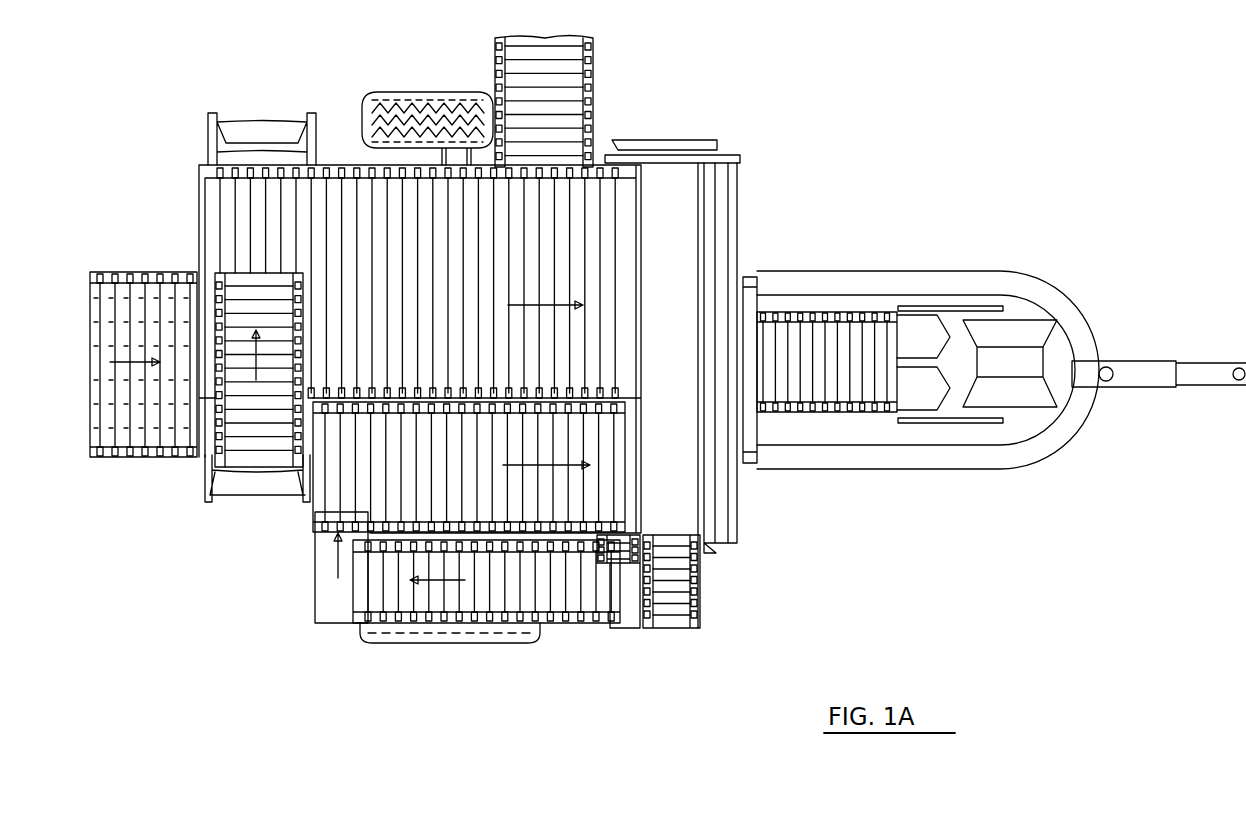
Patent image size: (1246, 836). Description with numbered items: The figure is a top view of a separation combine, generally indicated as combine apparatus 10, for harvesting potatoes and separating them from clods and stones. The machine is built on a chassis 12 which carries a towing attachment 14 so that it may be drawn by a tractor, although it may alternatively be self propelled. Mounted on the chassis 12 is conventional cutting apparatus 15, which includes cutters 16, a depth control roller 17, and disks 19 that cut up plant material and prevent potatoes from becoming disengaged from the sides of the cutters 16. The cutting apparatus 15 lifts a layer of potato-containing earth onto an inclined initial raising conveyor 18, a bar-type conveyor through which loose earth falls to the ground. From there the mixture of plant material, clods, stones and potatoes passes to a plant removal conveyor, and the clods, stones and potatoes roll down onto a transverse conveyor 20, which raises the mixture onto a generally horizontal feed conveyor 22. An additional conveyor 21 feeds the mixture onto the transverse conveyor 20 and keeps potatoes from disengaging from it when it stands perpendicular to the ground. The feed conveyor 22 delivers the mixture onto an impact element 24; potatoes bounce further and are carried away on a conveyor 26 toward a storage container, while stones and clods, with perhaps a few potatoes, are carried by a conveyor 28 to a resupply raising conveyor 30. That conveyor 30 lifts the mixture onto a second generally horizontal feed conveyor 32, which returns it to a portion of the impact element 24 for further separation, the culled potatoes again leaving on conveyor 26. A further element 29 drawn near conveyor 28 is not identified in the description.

The combine apparatus 10 is at (767, 155).
The chassis 12 is at (1036, 280).
The towing attachment 14 is at (1200, 360).
The cutting apparatus 15 is at (915, 330).
The cutters 16 is at (927, 378).
The depth control roller 17 is at (1040, 330).
The initial raising conveyor 18 is at (808, 334).
The disks 19 is at (975, 305).
The transverse conveyor 20 is at (250, 488).
The additional conveyor 21 is at (243, 432).
The feed conveyor 22 is at (356, 185).
The impact element 24 is at (683, 178).
The conveyor 26 is at (590, 64).
The conveyor 28 is at (620, 548).
The side ladder block 29 is at (688, 576).
The resupply raising conveyor 30 is at (370, 598).
The feed conveyor 32 is at (328, 487).